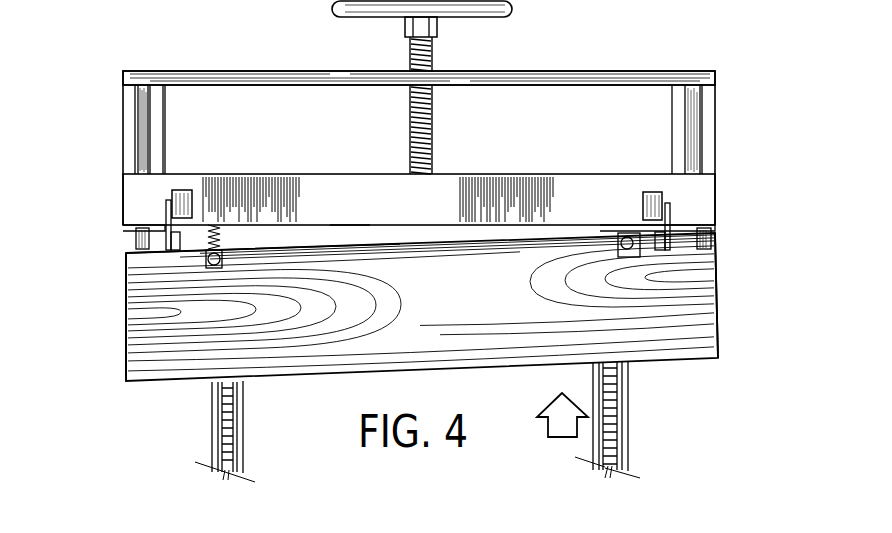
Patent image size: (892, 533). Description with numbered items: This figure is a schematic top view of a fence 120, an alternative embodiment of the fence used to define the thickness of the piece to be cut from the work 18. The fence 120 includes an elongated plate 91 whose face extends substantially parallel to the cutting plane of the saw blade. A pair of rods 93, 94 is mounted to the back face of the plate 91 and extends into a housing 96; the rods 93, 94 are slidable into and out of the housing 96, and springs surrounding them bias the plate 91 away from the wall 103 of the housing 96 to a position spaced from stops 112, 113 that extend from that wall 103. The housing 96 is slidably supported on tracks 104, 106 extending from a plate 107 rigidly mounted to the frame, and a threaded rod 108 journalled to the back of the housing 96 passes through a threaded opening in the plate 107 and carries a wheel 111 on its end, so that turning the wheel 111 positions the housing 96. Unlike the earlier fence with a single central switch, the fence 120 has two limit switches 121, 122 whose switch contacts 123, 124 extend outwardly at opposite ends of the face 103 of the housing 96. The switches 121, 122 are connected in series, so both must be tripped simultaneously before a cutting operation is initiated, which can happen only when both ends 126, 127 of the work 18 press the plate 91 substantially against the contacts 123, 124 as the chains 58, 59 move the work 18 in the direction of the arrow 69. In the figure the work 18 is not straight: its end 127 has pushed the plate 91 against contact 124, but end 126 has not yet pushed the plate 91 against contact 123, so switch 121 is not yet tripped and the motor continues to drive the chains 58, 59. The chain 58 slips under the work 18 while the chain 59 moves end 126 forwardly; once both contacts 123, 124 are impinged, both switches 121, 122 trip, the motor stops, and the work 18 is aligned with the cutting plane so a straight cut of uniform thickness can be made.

The work 18 is at (318, 357).
The endless chain 58 is at (618, 410).
The endless chain 59 is at (218, 420).
The arrow 69 is at (550, 426).
The plate 91 is at (135, 262).
The rod 93 is at (226, 238).
The rod 94 is at (620, 232).
The housing 96 is at (700, 208).
The wall of housing 103 is at (347, 228).
The track 104 is at (140, 118).
The track 106 is at (693, 127).
The plate 107 is at (330, 72).
The threaded rod 108 is at (433, 137).
The wheel 111 is at (515, 9).
The stop 112 is at (136, 243).
The stop 113 is at (712, 238).
The fence 120 is at (696, 62).
The limit switch 121 is at (183, 190).
The limit switch 122 is at (651, 200).
The switch contact 123 is at (175, 242).
The switch contact 124 is at (624, 233).
The end of work 126 is at (140, 345).
The end of work 127 is at (708, 318).